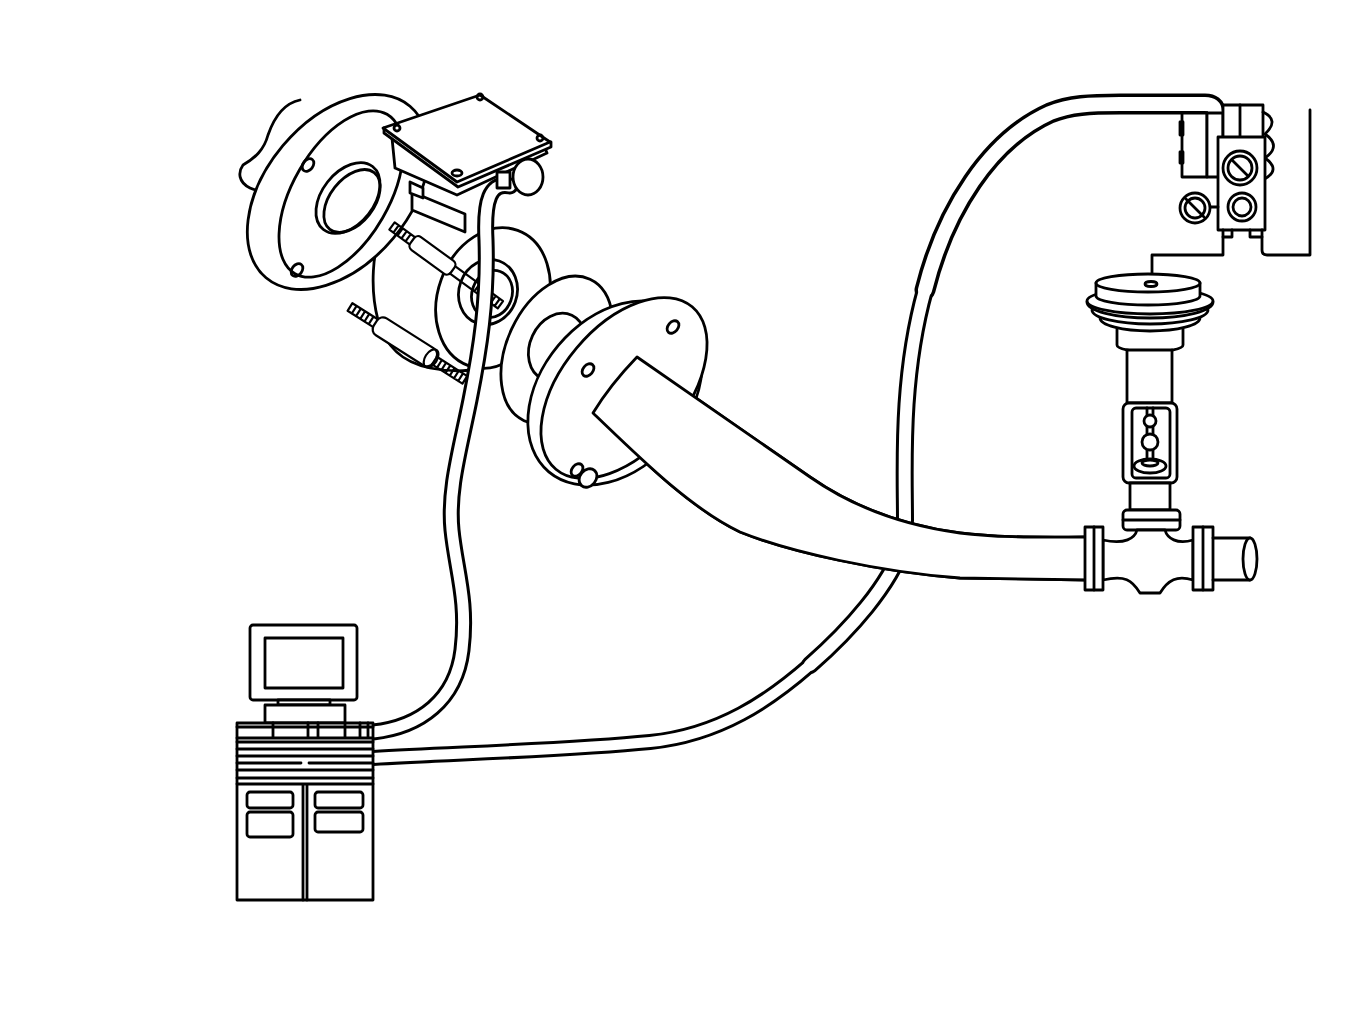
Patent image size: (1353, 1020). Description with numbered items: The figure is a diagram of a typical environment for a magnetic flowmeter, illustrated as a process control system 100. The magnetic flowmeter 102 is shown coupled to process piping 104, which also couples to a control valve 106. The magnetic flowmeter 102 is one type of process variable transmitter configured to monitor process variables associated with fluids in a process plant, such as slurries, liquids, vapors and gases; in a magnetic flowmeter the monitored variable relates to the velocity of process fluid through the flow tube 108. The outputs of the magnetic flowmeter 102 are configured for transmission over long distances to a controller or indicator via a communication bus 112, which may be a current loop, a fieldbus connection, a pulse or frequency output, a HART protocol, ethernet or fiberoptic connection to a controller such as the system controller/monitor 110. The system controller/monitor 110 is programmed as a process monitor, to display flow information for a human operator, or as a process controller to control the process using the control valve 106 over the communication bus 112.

The process control system 100 is at (742, 208).
The magnetic flowmeter 102 is at (308, 378).
The process piping 104 is at (787, 535).
The control valve 106 is at (1183, 383).
The flow tube 108 is at (518, 243).
The system controller/monitor 110 is at (397, 798).
The communication bus 112 is at (815, 682).